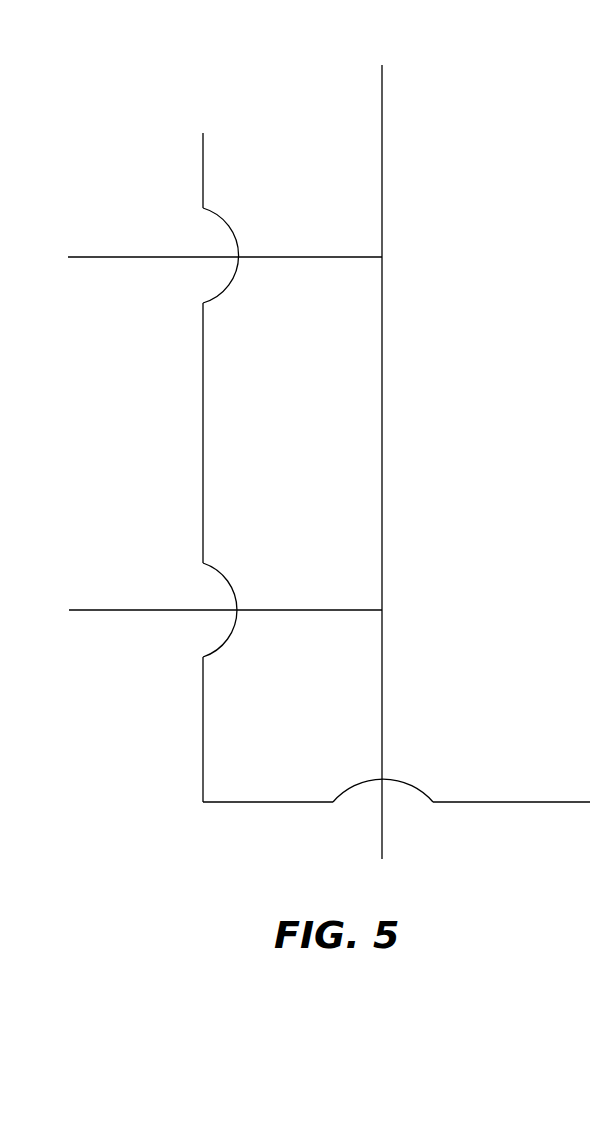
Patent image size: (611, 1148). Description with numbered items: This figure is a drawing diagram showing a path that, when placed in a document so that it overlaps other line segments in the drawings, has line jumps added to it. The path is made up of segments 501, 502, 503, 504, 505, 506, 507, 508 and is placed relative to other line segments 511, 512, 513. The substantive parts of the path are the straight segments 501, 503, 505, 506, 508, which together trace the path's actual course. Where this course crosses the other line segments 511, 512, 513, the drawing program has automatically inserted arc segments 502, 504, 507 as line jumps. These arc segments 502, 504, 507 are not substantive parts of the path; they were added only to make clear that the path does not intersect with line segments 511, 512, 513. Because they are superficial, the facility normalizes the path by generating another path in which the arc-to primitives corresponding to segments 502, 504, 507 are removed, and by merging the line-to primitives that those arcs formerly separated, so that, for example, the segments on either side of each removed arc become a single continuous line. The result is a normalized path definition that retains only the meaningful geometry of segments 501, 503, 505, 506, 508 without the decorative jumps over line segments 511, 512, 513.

The path segment 501 is at (203, 160).
The arc segment 502 is at (224, 287).
The path segment 503 is at (203, 437).
The arc segment 504 is at (224, 580).
The path segment 505 is at (203, 732).
The path segment 506 is at (262, 802).
The arc segment 507 is at (403, 783).
The path segment 508 is at (512, 802).
The line segment 511 is at (382, 160).
The line segment 512 is at (282, 257).
The line segment 513 is at (298, 610).